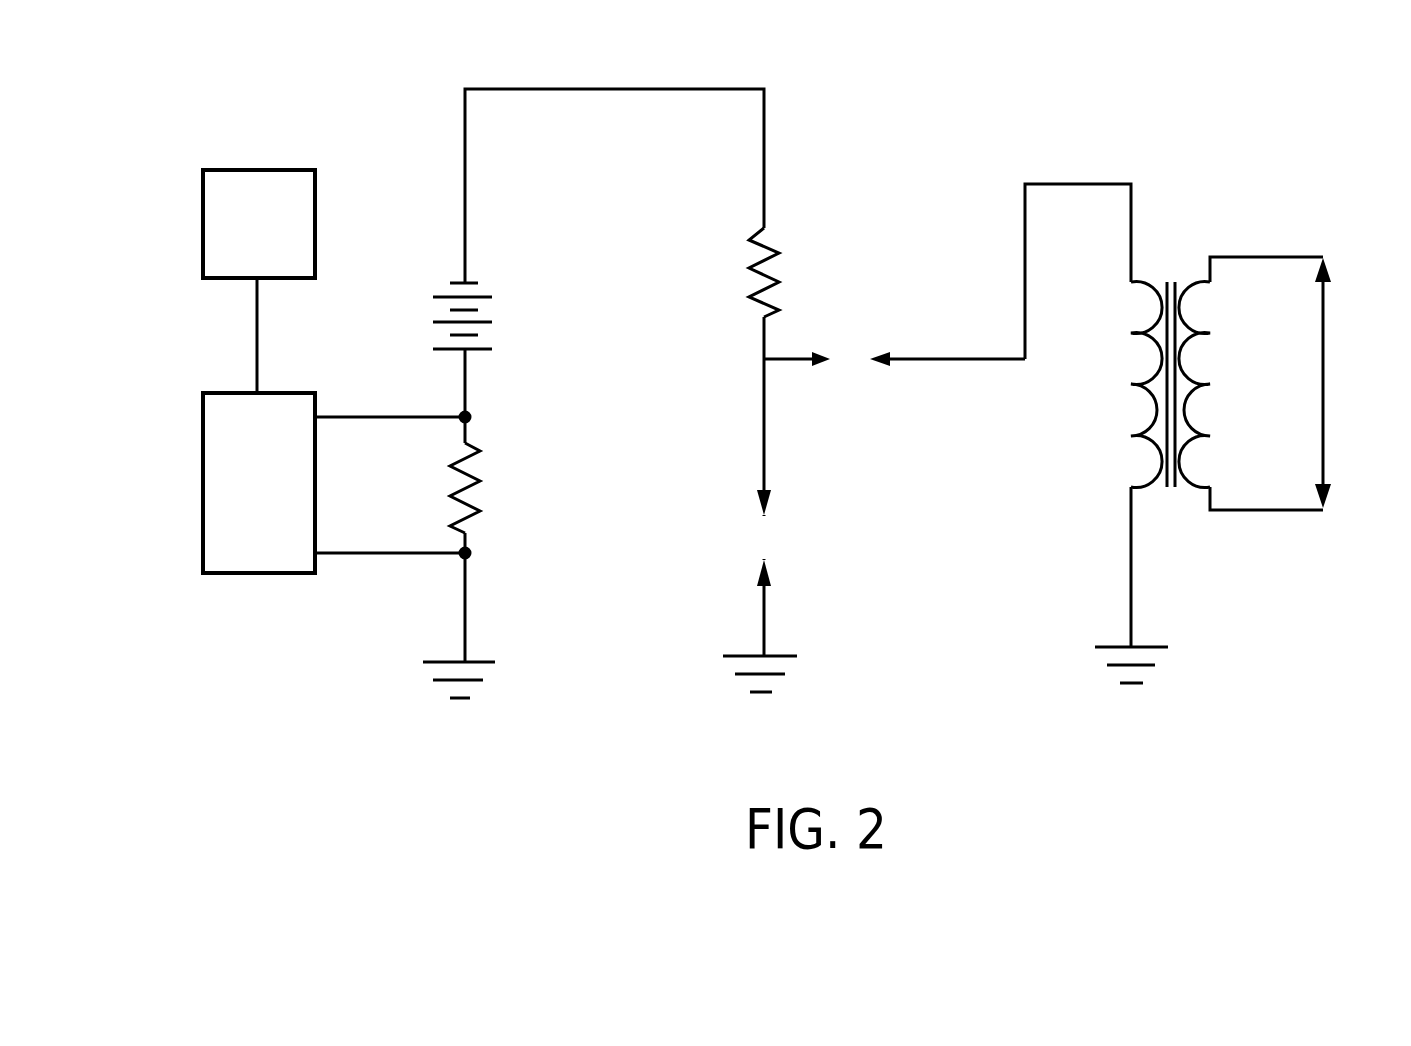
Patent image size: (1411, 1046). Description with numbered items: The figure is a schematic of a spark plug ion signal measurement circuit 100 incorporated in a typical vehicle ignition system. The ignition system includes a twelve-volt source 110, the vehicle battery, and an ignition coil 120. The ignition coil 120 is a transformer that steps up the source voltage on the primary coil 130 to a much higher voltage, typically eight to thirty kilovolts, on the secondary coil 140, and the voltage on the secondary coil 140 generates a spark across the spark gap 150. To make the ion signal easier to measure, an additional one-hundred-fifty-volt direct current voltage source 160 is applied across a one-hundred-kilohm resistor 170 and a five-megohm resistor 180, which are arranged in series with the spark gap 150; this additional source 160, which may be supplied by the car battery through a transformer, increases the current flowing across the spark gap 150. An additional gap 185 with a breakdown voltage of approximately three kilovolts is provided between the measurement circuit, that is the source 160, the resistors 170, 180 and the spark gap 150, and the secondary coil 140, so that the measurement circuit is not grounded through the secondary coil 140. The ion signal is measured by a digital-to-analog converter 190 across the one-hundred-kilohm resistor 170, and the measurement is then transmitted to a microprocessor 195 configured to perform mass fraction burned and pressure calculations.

The spark plug ion signal measurement circuit 100 is at (960, 62).
The 12 V source 110 is at (1335, 387).
The ignition coil 120 is at (1158, 278).
The primary coil 130 is at (1202, 383).
The secondary coil 140 is at (1142, 383).
The spark gap 150 is at (757, 538).
The 150 V direct current voltage source 160 is at (487, 295).
The 100 kΩ resistor 170 is at (475, 490).
The 5 MΩ resistor 180 is at (772, 273).
The additional gap 185 is at (852, 362).
The digital-to-analog converter 190 is at (290, 560).
The microprocessor 195 is at (285, 267).